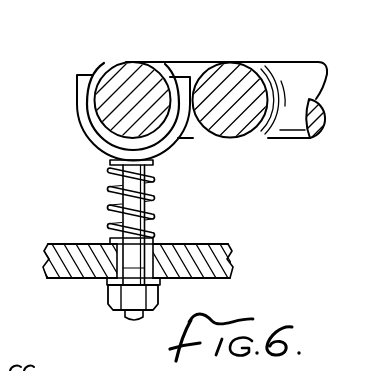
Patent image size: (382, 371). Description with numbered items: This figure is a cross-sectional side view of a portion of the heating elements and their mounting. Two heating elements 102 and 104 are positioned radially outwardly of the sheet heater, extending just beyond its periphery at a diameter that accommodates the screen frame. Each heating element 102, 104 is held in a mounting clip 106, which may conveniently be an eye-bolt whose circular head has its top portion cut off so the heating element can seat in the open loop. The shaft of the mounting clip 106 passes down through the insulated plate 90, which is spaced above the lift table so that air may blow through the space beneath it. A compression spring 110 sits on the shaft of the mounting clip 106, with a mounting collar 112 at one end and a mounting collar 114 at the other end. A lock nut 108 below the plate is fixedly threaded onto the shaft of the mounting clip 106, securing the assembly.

The insulated plate 90 is at (207, 243).
The heating element 102 is at (126, 62).
The heating element 104 is at (226, 71).
The mounting clip 106 is at (78, 100).
The lock nut 108 is at (110, 289).
The compression spring 110 is at (111, 193).
The mounting collar 112 is at (153, 162).
The mounting collar 114 is at (152, 244).